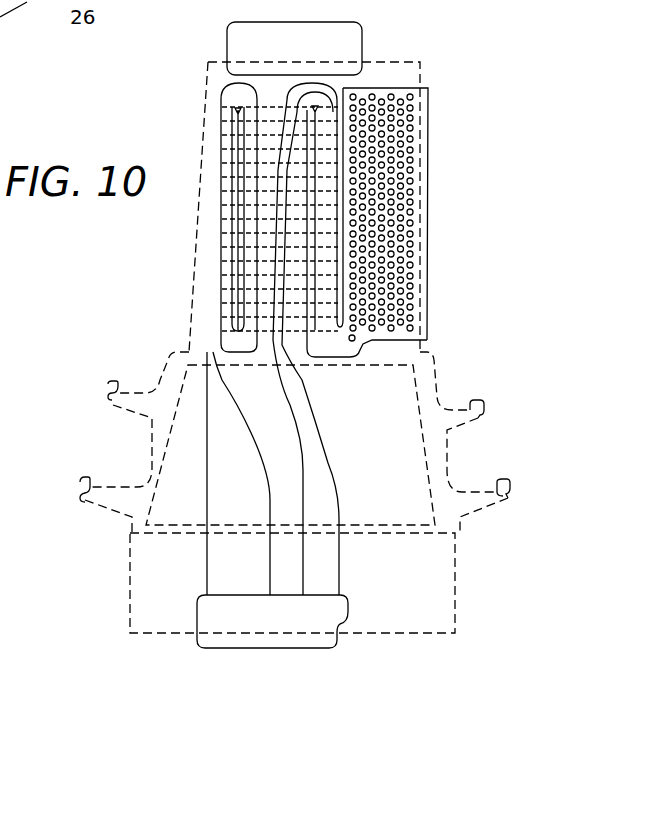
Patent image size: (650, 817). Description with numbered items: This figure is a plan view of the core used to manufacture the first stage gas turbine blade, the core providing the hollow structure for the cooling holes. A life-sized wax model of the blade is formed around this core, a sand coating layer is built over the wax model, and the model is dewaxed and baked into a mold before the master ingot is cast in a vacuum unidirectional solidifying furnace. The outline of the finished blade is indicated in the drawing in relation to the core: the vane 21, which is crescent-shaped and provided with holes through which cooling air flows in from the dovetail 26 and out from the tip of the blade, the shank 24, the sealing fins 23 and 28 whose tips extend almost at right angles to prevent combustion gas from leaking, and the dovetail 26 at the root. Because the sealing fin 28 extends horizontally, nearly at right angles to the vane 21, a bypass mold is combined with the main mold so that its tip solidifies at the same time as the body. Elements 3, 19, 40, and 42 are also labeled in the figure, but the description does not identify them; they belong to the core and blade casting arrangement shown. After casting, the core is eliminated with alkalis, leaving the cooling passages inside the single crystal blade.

The sensor element 3 is at (422, 69).
The upper terminal pad 19 is at (362, 28).
The vane 21 is at (292, 648).
The sealing fin 23 is at (487, 414).
The shank 24 is at (402, 382).
The dovetail 26 is at (447, 593).
The sealing fin 28 is at (507, 490).
The perforated plate 40 is at (412, 132).
The heater conductor pattern 42 is at (213, 247).